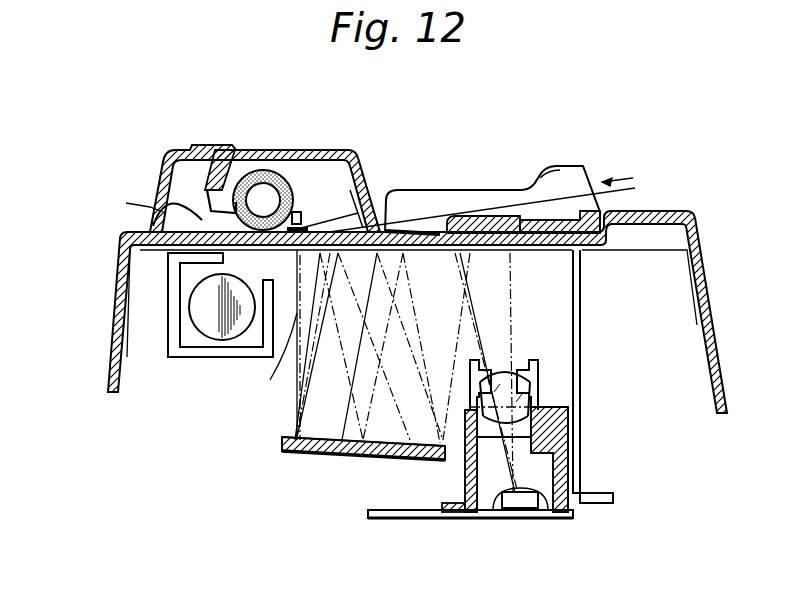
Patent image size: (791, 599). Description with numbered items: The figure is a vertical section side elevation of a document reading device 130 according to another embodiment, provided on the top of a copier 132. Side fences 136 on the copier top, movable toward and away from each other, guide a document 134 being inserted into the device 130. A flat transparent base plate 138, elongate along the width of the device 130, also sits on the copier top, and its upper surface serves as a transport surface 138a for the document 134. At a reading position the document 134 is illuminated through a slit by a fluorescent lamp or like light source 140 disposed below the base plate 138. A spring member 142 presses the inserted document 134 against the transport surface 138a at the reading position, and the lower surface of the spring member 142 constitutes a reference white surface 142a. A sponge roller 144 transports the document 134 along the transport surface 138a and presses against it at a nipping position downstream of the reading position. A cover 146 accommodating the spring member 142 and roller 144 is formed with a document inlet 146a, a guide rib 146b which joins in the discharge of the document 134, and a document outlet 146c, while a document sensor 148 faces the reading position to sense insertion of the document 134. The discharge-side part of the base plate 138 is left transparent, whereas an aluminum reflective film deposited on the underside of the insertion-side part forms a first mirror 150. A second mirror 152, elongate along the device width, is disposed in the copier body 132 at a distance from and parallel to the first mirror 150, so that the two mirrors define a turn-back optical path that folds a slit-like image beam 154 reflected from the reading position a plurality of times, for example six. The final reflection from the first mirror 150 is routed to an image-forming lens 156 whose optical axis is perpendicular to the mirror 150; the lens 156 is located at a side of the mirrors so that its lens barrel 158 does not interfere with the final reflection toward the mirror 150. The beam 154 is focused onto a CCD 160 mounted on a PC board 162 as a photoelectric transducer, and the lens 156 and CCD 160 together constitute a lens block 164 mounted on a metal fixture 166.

The device 130 is at (237, 452).
The copier 132 is at (122, 278).
The document 134 is at (565, 205).
The side fences 136 is at (533, 170).
The base plate 138 is at (458, 213).
The transport surface 138a is at (437, 215).
The light source 140 is at (203, 318).
The spring member 142 is at (365, 160).
The reference white surface 142a is at (341, 152).
The sponge roller 144 is at (255, 160).
The cover 146 is at (357, 150).
The document inlet 146a is at (384, 212).
The guide rib 146b is at (160, 158).
The document outlet 146c is at (210, 150).
The document sensor 148 is at (290, 150).
The first mirror 150 is at (501, 212).
The second mirror 152 is at (353, 450).
The beam 154 is at (317, 453).
The image-forming lens 156 is at (540, 427).
The lens barrel 158 is at (543, 370).
The CCD 160 is at (526, 505).
The PC board 162 is at (420, 520).
The lens block 164 is at (461, 512).
The metal fixture 166 is at (580, 475).